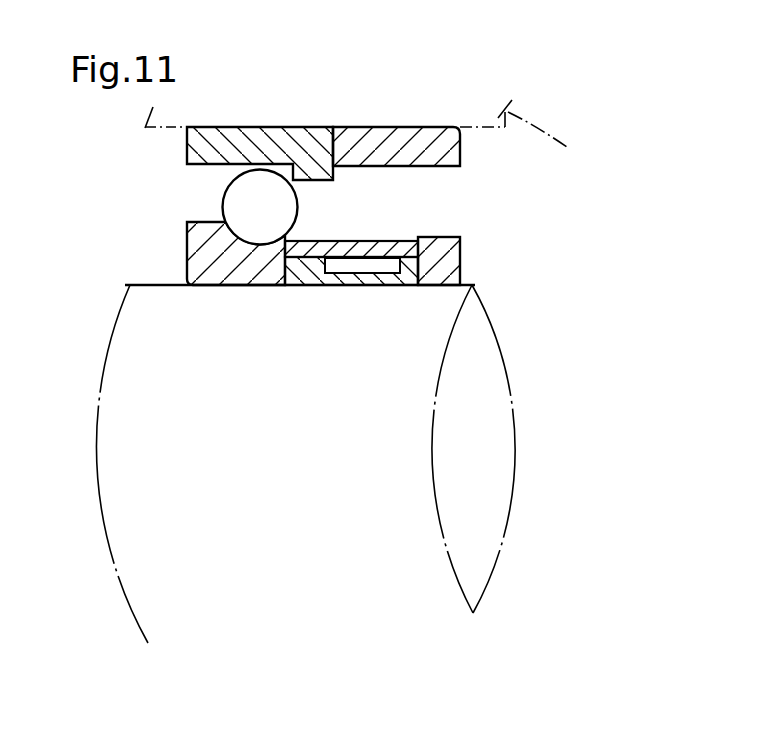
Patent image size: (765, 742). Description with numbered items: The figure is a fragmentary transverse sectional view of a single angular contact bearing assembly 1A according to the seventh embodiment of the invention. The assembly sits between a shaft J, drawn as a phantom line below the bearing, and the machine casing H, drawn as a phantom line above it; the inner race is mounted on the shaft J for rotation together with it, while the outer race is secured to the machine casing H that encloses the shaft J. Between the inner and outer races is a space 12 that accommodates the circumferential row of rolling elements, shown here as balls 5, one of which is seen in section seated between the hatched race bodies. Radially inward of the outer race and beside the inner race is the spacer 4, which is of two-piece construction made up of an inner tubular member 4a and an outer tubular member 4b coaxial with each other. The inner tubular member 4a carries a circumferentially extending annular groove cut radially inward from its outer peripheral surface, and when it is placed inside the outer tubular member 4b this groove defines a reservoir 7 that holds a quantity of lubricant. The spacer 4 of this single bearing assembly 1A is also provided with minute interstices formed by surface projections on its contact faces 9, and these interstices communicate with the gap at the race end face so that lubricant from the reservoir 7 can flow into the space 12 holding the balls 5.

The single angular contact bearing assembly 1A is at (174, 161).
The balls 5 is at (240, 197).
The space 12 is at (290, 234).
The contact faces 9 is at (305, 286).
The reservoir 7 is at (363, 268).
The inner tubular member 4a is at (380, 286).
The outer tubular member 4b is at (412, 286).
The spacer 4 is at (437, 343).
The machine casing H is at (370, 132).
The shaft J is at (497, 329).